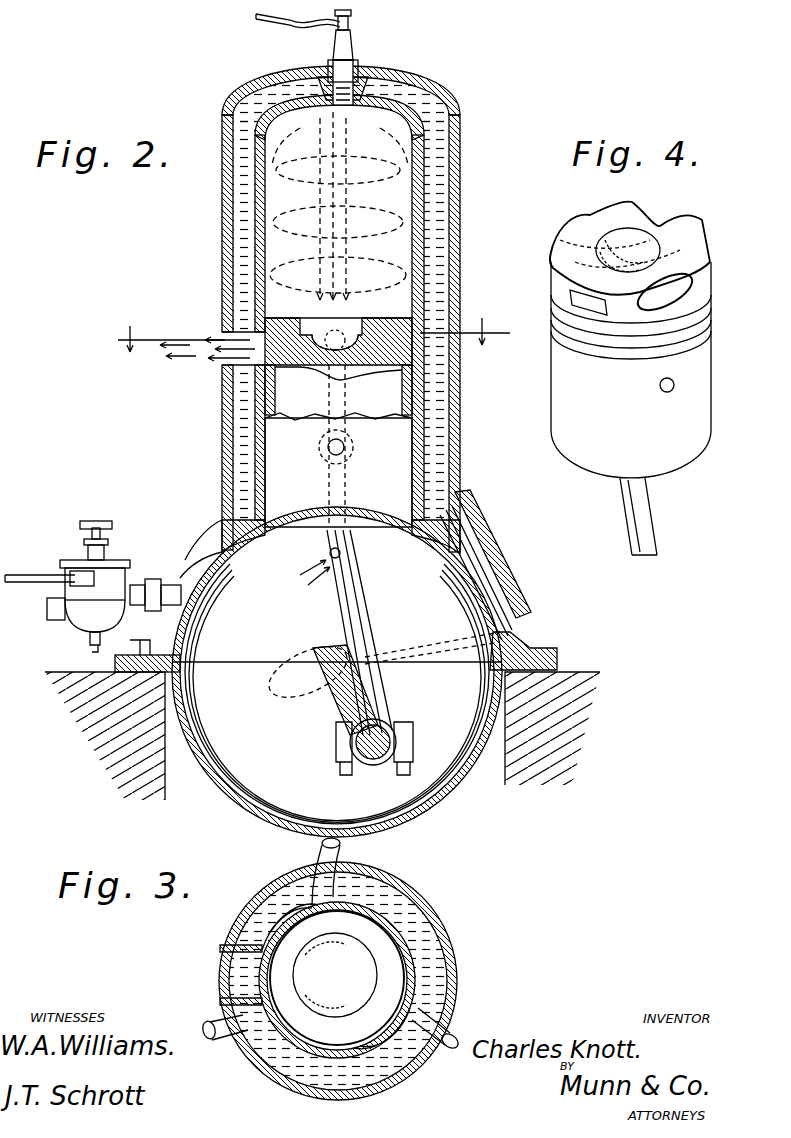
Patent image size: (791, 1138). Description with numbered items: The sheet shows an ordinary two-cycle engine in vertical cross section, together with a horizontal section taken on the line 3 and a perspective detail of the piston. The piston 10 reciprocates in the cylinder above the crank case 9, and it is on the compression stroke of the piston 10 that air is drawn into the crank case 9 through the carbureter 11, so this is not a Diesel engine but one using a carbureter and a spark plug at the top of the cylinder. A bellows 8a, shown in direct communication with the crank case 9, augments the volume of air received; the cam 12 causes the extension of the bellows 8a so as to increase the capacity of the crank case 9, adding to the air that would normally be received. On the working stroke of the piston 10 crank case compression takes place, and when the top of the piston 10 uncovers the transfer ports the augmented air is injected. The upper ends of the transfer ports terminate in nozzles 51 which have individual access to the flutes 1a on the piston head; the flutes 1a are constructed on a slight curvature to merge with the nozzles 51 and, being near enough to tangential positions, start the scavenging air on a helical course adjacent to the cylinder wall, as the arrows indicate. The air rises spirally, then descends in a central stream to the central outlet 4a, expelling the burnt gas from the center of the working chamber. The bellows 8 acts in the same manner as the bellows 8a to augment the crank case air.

In FIG. 2, the flutes 1a is at (400, 335).
In FIG. 3, the flutes 1a is at (340, 892).
In FIG. 4, the flutes 1a is at (665, 224).
In FIG. 2, the section line 3— 3 is at (311, 335).
In FIG. 2, the central outlet 4a is at (325, 305).
In FIG. 3, the central outlet 4a is at (363, 1002).
In FIG. 4, the central outlet 4a is at (616, 244).
In FIG. 2, the bellows 8 is at (300, 700).
In FIG. 2, the bellows 8a is at (490, 560).
In FIG. 2, the crank case 9 is at (205, 562).
In FIG. 2, the piston 10 is at (287, 522).
In FIG. 2, the carbureter 11 is at (85, 612).
In FIG. 2, the cam 12 is at (306, 570).
In FIG. 3, the cam 12 is at (341, 845).
In FIG. 3, the nozzles 51 is at (448, 1018).